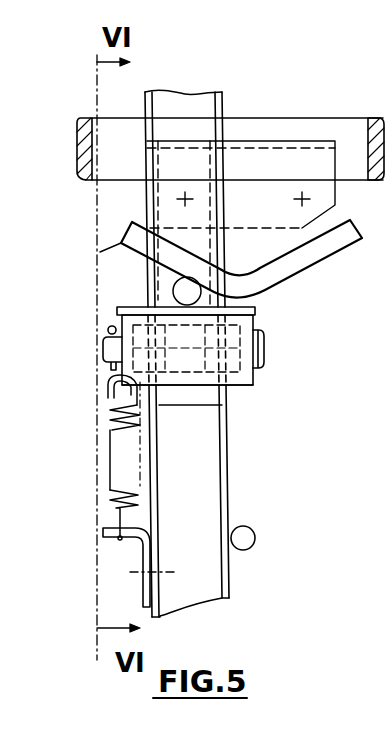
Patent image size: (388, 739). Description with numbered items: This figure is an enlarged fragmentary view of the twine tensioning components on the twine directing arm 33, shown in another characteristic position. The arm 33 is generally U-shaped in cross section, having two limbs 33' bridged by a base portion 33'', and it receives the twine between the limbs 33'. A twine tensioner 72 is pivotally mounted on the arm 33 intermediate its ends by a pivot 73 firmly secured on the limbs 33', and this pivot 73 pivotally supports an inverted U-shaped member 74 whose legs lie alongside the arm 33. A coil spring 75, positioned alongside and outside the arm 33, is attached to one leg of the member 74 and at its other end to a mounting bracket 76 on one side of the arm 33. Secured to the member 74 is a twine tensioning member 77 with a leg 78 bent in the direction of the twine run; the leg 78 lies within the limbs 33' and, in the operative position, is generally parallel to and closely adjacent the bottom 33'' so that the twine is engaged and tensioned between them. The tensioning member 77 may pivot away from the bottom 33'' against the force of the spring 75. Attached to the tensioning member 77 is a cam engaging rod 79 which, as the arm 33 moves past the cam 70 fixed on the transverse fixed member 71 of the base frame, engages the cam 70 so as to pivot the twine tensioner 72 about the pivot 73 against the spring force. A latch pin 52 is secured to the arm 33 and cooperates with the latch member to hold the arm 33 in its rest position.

The transverse fixed member 71 is at (361, 180).
The leg 78 is at (150, 211).
The twine directing arm 33 is at (229, 353).
The limbs 33' is at (241, 454).
The base portion 33'' is at (197, 607).
The cam 70 is at (313, 267).
The twine tensioning member 77 is at (150, 275).
The cam engaging rod 79 is at (173, 295).
The twine tensioner 72 is at (260, 402).
The pivot 73 is at (267, 348).
The inverted U-shaped member 74 is at (257, 379).
The coil spring 75 is at (110, 447).
The mounting bracket 76 is at (108, 540).
The latch pin 52 is at (255, 543).